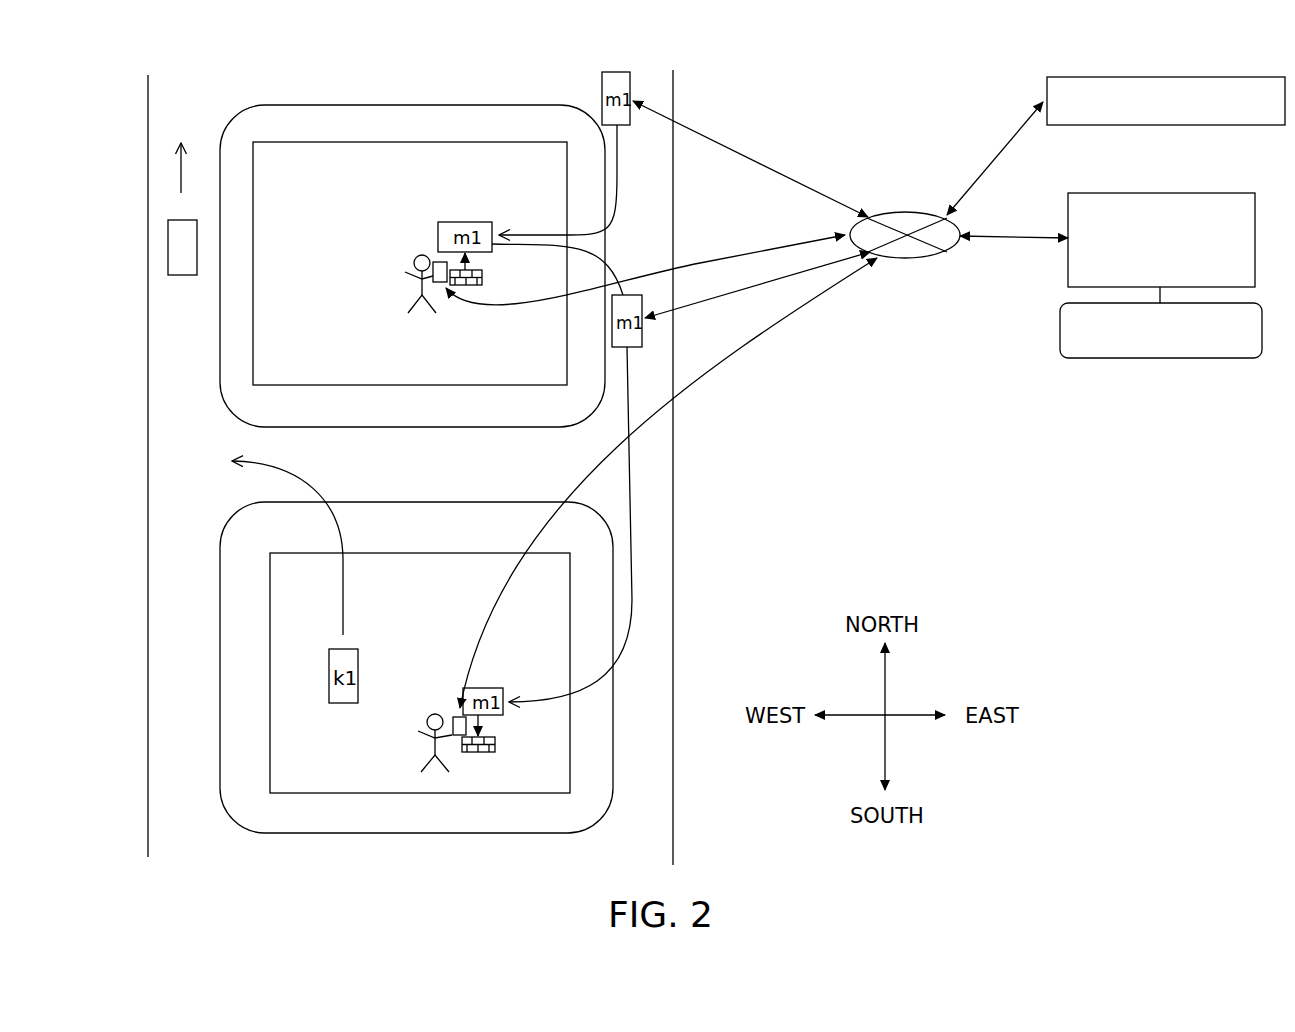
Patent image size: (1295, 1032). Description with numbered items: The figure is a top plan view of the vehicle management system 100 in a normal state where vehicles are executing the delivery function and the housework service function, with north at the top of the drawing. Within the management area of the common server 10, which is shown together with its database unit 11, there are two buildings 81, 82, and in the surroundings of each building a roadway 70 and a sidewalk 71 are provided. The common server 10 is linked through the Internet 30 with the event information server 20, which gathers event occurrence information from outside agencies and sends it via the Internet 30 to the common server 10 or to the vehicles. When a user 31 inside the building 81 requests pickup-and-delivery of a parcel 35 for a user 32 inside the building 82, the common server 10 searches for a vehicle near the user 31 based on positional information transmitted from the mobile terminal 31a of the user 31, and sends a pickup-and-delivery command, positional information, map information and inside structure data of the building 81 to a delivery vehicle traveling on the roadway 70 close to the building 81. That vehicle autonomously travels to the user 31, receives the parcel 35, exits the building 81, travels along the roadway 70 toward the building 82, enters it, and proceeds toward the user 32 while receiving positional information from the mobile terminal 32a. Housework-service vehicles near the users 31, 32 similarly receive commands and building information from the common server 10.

The information providing system 100 is at (789, 80).
The common server 10 is at (1115, 193).
The database unit 11 is at (1150, 358).
The event information server 20 is at (1120, 77).
The Internet 30 is at (922, 212).
The user 31 is at (415, 292).
The mobile terminal 31a is at (433, 262).
The user 32 is at (432, 746).
The mobile terminal 32a is at (455, 717).
The parcel 35 is at (483, 278).
The roadway 70 is at (175, 430).
The sidewalk 71 is at (233, 334).
The building 81 is at (357, 142).
The building 82 is at (320, 793).